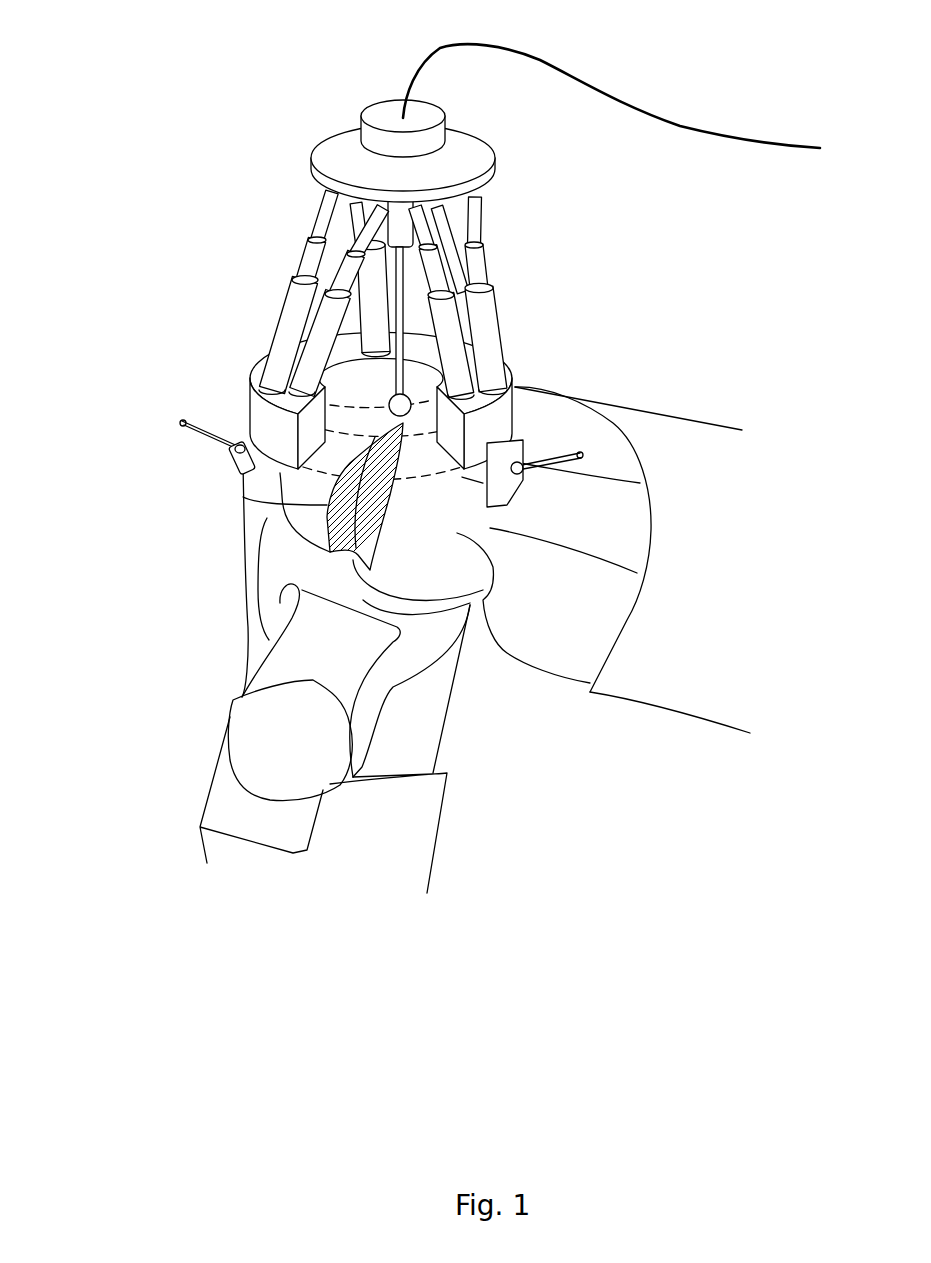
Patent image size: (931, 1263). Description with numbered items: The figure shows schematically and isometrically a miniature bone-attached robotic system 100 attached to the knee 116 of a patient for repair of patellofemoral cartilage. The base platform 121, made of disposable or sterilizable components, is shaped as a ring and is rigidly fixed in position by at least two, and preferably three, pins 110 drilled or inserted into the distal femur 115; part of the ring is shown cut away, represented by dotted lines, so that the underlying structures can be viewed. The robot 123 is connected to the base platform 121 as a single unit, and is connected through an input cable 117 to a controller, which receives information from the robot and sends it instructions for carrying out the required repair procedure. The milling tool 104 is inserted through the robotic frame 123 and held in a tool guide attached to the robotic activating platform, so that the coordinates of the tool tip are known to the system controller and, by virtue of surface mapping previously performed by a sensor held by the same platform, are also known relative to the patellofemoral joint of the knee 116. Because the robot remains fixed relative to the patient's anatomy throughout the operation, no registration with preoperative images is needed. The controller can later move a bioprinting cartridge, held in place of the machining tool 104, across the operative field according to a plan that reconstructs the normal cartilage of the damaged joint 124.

The bone-attached robotic system 100 is at (300, 118).
The milling tool 104 is at (288, 307).
The pins 110 is at (182, 423).
The distal femur 115 is at (496, 578).
The knee 116 is at (242, 556).
The input cable 117 is at (624, 103).
The base platform 121 is at (248, 417).
The robot 123 is at (525, 120).
The damaged joint 124 is at (238, 486).